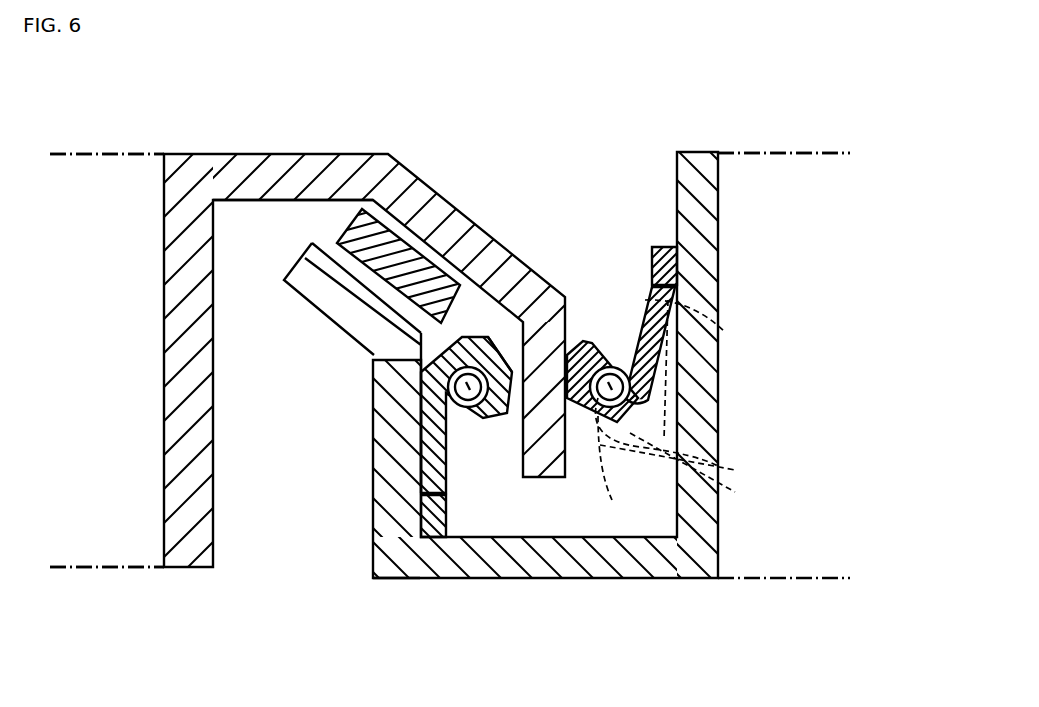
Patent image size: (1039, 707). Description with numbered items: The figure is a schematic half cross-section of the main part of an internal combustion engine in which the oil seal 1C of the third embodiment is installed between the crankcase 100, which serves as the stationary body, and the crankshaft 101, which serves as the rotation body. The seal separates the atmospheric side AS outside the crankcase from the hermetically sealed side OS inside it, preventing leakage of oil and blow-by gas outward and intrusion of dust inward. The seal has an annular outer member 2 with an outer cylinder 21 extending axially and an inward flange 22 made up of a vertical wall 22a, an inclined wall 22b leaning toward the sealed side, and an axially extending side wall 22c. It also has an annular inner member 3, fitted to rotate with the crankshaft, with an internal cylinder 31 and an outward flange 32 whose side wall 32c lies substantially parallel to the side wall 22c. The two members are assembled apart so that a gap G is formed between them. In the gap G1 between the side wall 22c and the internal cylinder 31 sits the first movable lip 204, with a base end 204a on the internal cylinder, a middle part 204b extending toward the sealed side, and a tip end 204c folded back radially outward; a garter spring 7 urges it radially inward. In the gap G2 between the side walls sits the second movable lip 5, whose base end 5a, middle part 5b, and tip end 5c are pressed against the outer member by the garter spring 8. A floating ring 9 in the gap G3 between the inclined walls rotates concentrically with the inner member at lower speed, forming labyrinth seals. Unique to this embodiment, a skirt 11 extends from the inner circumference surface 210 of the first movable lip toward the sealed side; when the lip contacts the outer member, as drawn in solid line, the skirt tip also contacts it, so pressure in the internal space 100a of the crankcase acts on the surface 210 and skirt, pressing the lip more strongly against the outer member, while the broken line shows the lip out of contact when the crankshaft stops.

The outer member 2 is at (367, 316).
The outer cylinder 21 is at (203, 230).
The inward flange 22 is at (190, 101).
The vertical wall 22a is at (268, 201).
The inclined wall 22b is at (425, 196).
The side wall 22c is at (580, 340).
The floating ring 9 is at (362, 209).
The inner member 3 is at (486, 410).
The internal cylinder 31 is at (697, 373).
The outward flange 32 is at (466, 469).
The side wall 32c is at (373, 412).
The second movable lip 5 is at (401, 366).
The base end 5a is at (420, 513).
The middle part 5b is at (420, 400).
The tip end 5c is at (512, 352).
The garter spring 7 is at (680, 440).
The garter spring 8 is at (404, 579).
The skirt 11 is at (620, 466).
The first movable lip 204 is at (657, 407).
The base end 204a is at (668, 266).
The middle part 204b is at (660, 332).
The tip end 204c is at (700, 488).
The inner circumference surface 210 is at (631, 390).
The crankcase 100 is at (90, 152).
The crankshaft 101 is at (795, 152).
The internal space 100a is at (218, 638).
The oil seal 1C is at (532, 140).
The atmospheric side AS is at (445, 73).
The hermetically sealed side OS is at (420, 683).
The gap G is at (490, 579).
The gap G1 is at (612, 308).
The gap G2 is at (460, 440).
The gap G3 is at (475, 330).